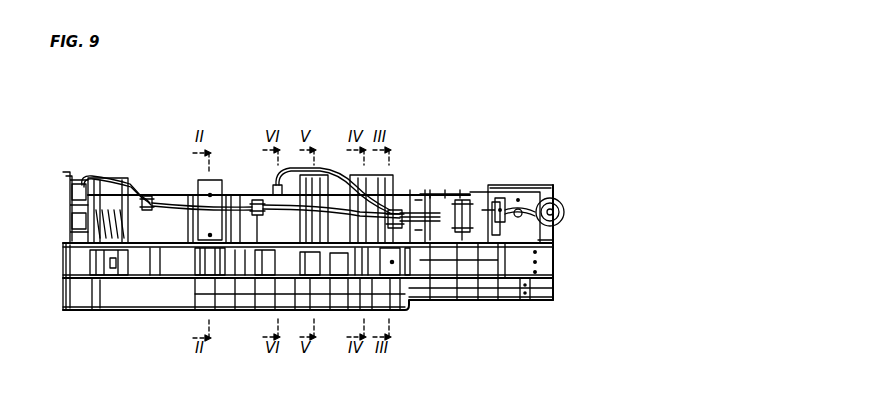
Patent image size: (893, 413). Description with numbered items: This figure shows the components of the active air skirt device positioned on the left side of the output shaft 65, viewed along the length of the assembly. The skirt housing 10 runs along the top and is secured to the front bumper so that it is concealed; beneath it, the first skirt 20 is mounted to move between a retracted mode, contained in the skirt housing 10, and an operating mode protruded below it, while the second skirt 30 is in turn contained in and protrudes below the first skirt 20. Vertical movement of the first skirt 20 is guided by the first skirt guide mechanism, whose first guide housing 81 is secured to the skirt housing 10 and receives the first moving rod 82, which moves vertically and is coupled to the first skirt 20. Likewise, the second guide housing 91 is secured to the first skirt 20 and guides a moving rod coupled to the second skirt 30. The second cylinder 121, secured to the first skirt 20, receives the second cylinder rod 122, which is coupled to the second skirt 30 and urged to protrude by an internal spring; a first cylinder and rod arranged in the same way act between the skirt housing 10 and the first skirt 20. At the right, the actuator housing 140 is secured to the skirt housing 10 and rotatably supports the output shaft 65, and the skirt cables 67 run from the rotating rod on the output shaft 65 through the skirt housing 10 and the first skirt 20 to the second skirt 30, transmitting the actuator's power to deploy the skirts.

The skirt housing 10 is at (245, 198).
The first skirt 20 is at (472, 262).
The second skirt 30 is at (240, 296).
The output shaft 65 is at (538, 198).
The skirt cables 67 is at (442, 225).
The first guide housing 81 is at (207, 217).
The first moving rod 82 is at (203, 258).
The second guide housing 91 is at (392, 262).
The second cylinder 121 is at (313, 230).
The second cylinder rod 122 is at (312, 290).
The actuator housing 140 is at (507, 200).